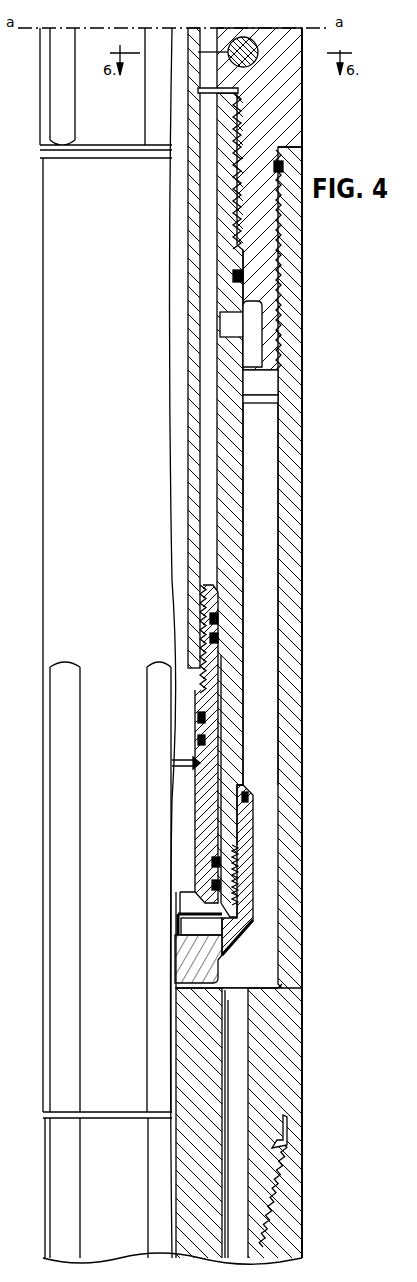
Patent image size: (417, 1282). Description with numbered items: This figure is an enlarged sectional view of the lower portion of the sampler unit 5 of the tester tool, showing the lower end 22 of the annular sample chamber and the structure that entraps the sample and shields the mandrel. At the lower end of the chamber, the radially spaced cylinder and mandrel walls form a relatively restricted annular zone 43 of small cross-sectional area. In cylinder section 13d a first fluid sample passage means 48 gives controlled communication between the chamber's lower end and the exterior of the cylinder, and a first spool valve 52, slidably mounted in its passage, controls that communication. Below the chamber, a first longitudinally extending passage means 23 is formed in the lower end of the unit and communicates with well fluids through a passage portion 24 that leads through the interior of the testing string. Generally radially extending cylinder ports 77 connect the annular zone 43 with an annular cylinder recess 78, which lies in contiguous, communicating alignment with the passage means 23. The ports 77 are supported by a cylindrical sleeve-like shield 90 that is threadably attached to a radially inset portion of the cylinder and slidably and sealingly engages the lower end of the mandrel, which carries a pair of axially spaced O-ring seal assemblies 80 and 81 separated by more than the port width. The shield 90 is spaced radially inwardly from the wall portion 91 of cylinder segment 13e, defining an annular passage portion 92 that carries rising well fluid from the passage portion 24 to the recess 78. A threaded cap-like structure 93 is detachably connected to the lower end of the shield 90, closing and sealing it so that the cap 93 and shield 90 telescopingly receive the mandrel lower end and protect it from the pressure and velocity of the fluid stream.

The sampler unit 5 is at (312, 554).
The cylinder section 13d is at (286, 127).
The cylinder segment 13e is at (295, 268).
The lower end of sample chamber 22 is at (210, 292).
The first longitudinally extending passage means 23 is at (267, 980).
The passage portion 24 is at (238, 1068).
The annular zone 43 is at (212, 453).
The first fluid sample passage means 48 is at (257, 58).
The first spool valve 52 is at (230, 62).
The cylinder ports 77 is at (236, 323).
The annular cylinder recess 78 is at (252, 347).
The seal assembly 80 is at (200, 623).
The seal assembly 81 is at (215, 872).
The cylindrical sleeve-like shield 90 is at (232, 657).
The wall portion 91 is at (293, 700).
The annular passage portion 92 is at (269, 718).
The threaded cap-like structure 93 is at (246, 866).